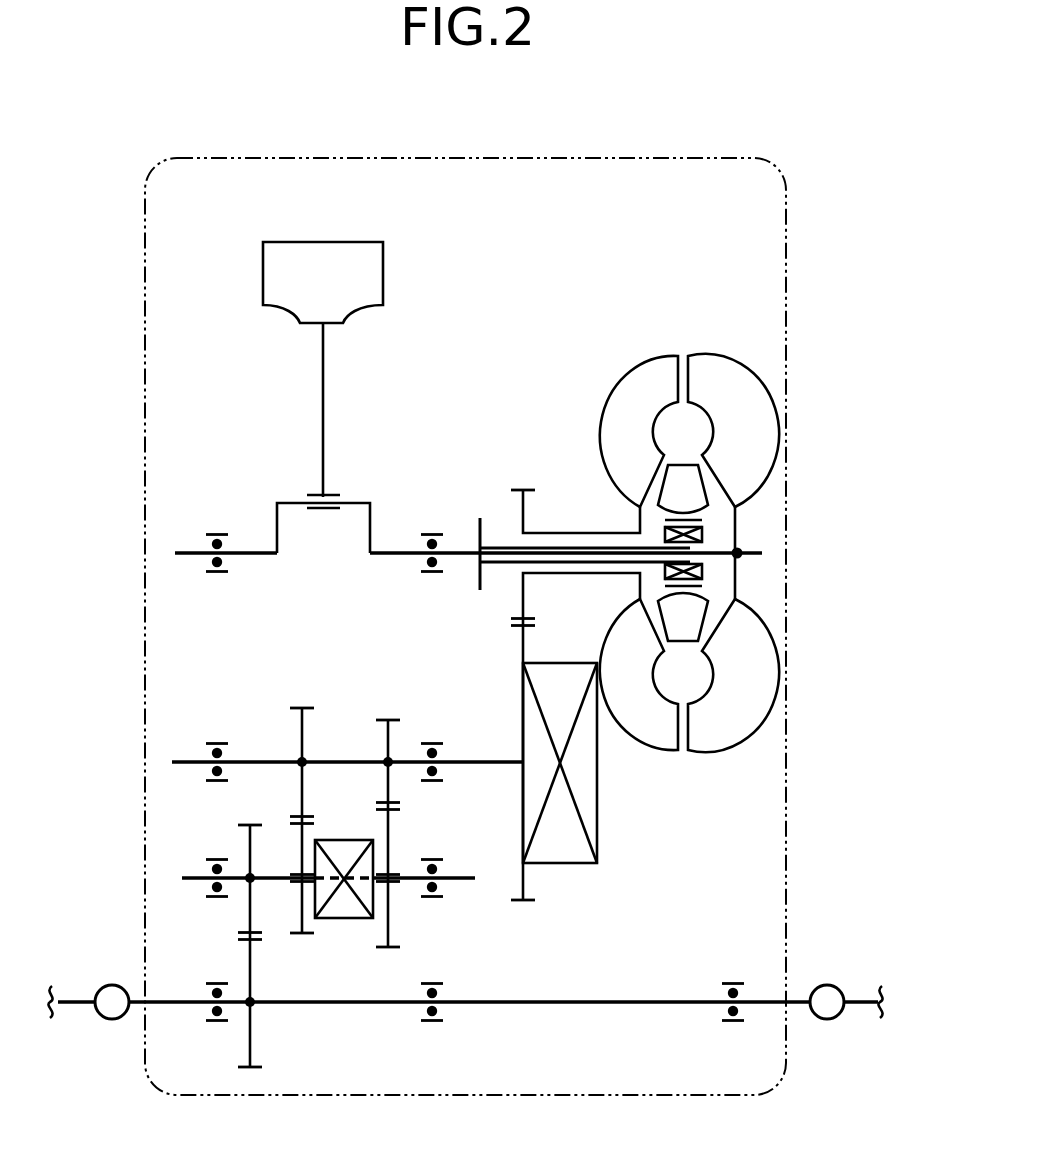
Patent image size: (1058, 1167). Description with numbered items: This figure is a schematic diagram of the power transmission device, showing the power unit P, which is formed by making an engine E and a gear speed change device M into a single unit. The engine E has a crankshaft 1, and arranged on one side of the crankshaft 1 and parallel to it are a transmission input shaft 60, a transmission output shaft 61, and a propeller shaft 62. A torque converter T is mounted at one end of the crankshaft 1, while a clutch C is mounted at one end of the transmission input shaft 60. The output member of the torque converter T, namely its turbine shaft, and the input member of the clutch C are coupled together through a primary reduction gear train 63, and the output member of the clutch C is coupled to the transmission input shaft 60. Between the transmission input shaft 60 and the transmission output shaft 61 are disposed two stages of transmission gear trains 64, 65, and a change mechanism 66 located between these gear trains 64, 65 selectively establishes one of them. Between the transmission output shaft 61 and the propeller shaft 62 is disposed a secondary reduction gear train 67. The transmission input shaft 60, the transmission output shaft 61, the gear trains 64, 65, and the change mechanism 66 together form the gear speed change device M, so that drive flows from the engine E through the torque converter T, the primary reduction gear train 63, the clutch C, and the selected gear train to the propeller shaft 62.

The power unit P is at (653, 159).
The engine E is at (374, 430).
The crankshaft 1 is at (394, 551).
The torque converter T is at (649, 367).
The primary reduction gear train 63 is at (515, 491).
The clutch C is at (598, 802).
The gear speed change device M is at (234, 704).
The transmission input shaft 60 is at (478, 761).
The transmission output shaft 61 is at (463, 877).
The propeller shaft 62 is at (603, 1000).
The transmission gear train 64 is at (391, 719).
The transmission gear train 65 is at (306, 707).
The change mechanism 66 is at (351, 839).
The secondary reduction gear train 67 is at (258, 824).